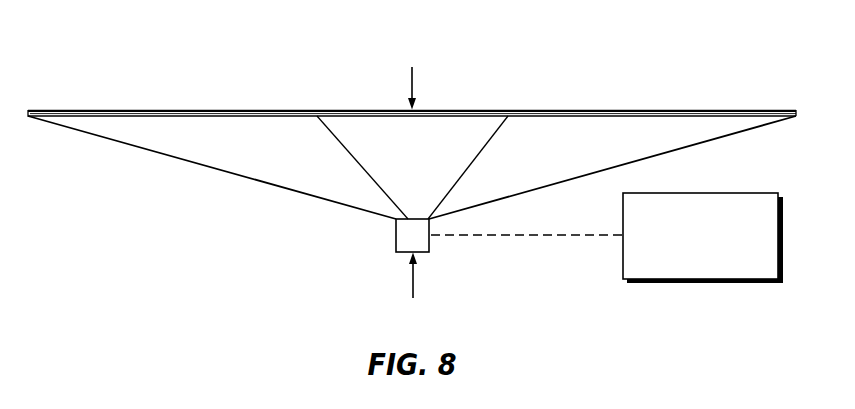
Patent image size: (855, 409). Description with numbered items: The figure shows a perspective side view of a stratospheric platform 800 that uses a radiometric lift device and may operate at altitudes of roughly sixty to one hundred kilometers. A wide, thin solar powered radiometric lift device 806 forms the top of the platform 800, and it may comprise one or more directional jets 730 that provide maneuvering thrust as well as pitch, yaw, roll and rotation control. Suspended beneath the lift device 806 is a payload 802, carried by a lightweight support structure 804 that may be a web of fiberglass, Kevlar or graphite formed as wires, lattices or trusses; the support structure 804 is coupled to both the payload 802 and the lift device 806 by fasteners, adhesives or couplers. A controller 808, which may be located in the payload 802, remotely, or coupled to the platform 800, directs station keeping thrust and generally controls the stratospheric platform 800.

The stratospheric platform 800 is at (631, 38).
The solar powered radiometric lift device 806 is at (150, 110).
The directional jets 730 is at (782, 113).
The support structure 804 is at (172, 157).
The payload 802 is at (402, 253).
The controller 808 is at (620, 259).